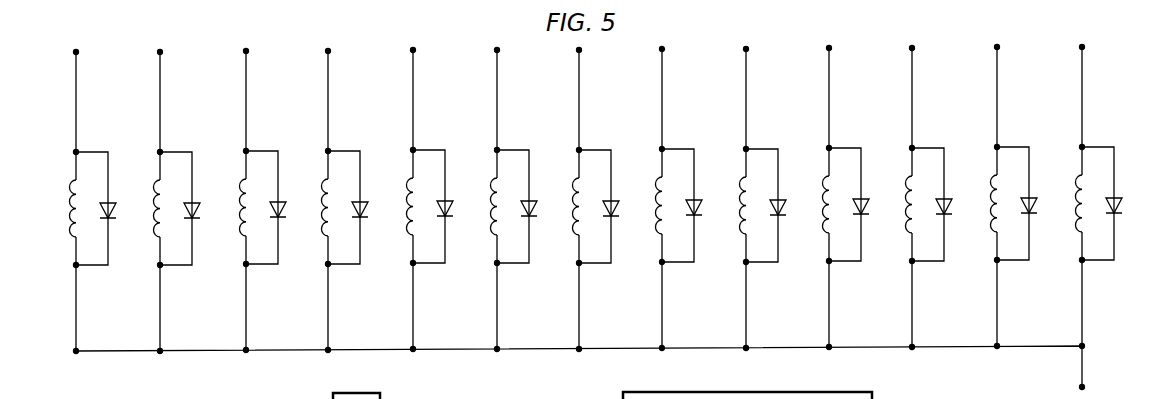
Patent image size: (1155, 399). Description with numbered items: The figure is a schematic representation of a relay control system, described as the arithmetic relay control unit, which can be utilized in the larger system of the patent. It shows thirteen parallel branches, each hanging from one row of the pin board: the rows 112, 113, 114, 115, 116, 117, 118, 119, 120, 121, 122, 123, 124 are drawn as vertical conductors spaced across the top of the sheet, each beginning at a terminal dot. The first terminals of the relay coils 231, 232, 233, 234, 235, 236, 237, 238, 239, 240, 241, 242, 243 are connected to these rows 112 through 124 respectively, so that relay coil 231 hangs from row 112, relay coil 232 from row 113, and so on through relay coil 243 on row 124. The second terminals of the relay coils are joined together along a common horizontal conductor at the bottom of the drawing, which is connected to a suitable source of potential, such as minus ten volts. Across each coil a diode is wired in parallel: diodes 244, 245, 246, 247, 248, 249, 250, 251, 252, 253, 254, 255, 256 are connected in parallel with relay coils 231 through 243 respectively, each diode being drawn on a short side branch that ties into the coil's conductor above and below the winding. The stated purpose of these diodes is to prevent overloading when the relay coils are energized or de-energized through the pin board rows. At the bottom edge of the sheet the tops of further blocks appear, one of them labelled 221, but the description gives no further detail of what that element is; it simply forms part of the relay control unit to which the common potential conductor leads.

The row of pin board 112 is at (76, 52).
The row of pin board 113 is at (160, 52).
The row of pin board 114 is at (246, 51).
The row of pin board 115 is at (328, 51).
The row of pin board 116 is at (413, 50).
The row of pin board 117 is at (497, 50).
The row of pin board 118 is at (579, 50).
The row of pin board 119 is at (662, 49).
The row of pin board 120 is at (746, 49).
The row of pin board 121 is at (829, 48).
The row of pin board 122 is at (912, 48).
The row of pin board 123 is at (997, 47).
The row of pin board 124 is at (1082, 47).
The relay coil 231 is at (72, 234).
The relay coil 232 is at (154, 233).
The relay coil 233 is at (240, 232).
The relay coil 234 is at (322, 232).
The relay coil 235 is at (407, 231).
The relay coil 236 is at (491, 231).
The relay coil 237 is at (573, 231).
The relay coil 238 is at (656, 230).
The relay coil 239 is at (740, 230).
The relay coil 240 is at (823, 229).
The relay coil 241 is at (906, 229).
The relay coil 242 is at (991, 228).
The relay coil 243 is at (1076, 228).
The diode 244 is at (109, 202).
The diode 245 is at (193, 202).
The diode 246 is at (279, 201).
The diode 247 is at (361, 201).
The diode 248 is at (446, 200).
The diode 249 is at (530, 200).
The diode 250 is at (612, 200).
The diode 251 is at (695, 199).
The diode 252 is at (779, 199).
The diode 253 is at (862, 198).
The diode 254 is at (945, 198).
The diode 255 is at (1030, 197).
The diode 256 is at (1115, 197).
The control circuit block 221 is at (903, 397).